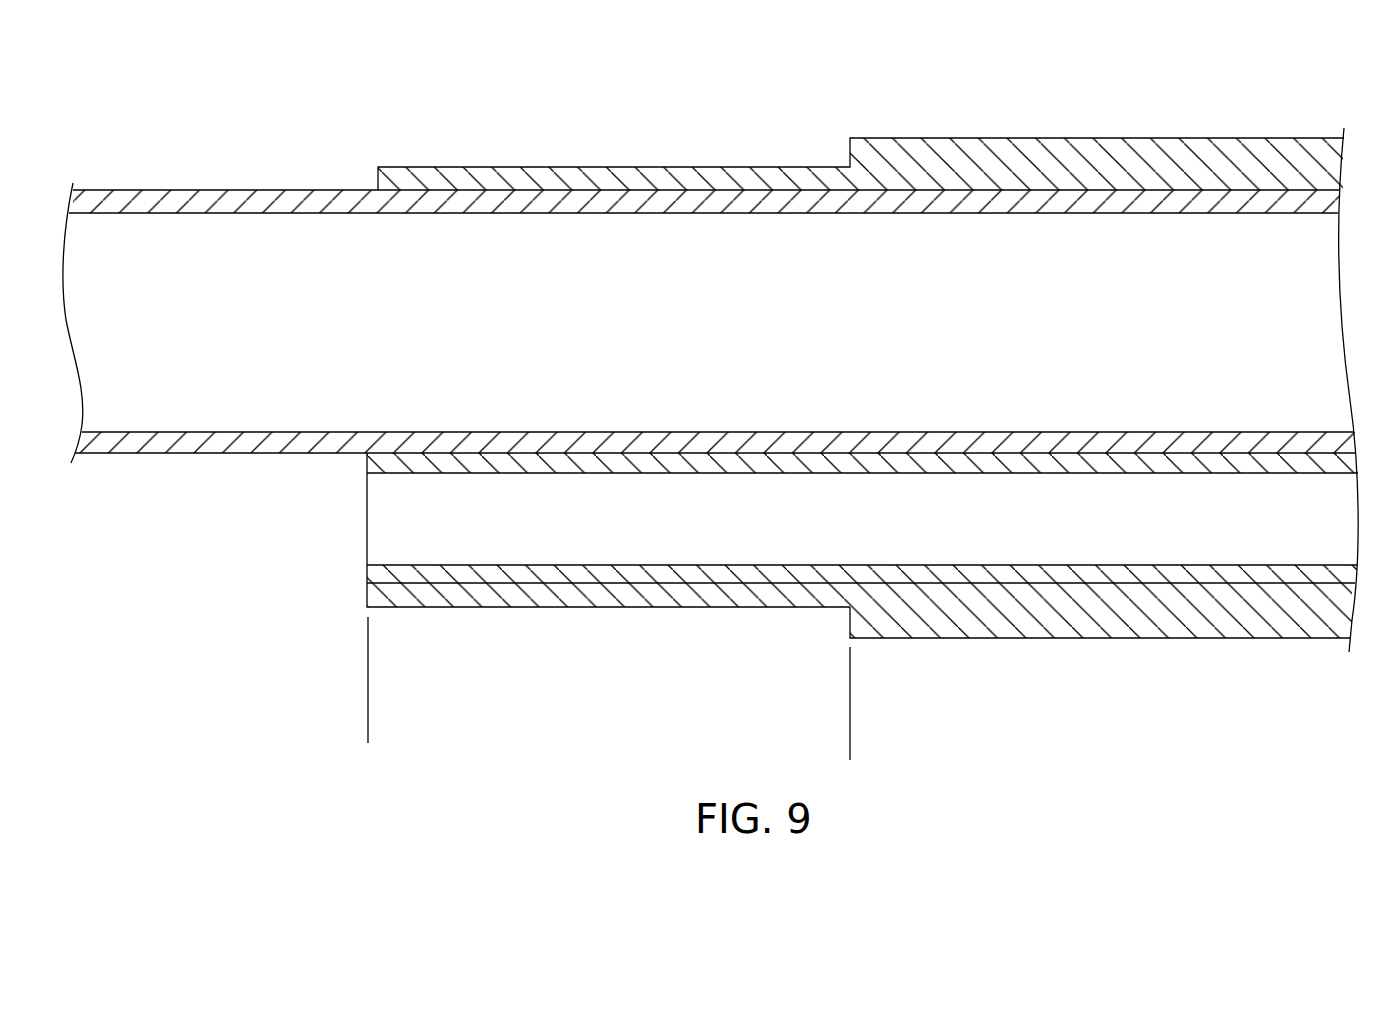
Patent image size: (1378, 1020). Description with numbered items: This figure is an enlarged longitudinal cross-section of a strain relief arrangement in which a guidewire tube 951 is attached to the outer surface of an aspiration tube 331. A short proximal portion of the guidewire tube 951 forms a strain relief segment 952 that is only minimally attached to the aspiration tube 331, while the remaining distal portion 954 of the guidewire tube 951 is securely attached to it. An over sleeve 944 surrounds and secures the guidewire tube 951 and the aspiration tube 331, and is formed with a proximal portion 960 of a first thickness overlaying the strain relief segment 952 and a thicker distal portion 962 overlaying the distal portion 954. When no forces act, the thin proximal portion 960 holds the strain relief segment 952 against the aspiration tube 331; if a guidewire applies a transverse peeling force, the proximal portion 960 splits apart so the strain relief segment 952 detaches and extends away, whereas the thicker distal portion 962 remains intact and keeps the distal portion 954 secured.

The aspiration tube 331 is at (232, 206).
The over sleeve 944 is at (815, 162).
The guidewire tube 951 is at (934, 574).
The strain relief segment 952 is at (849, 689).
The distal portion of guidewire tube 954 is at (1348, 731).
The proximal portion of over sleeve 960 is at (674, 603).
The distal portion of over sleeve 962 is at (1050, 622).